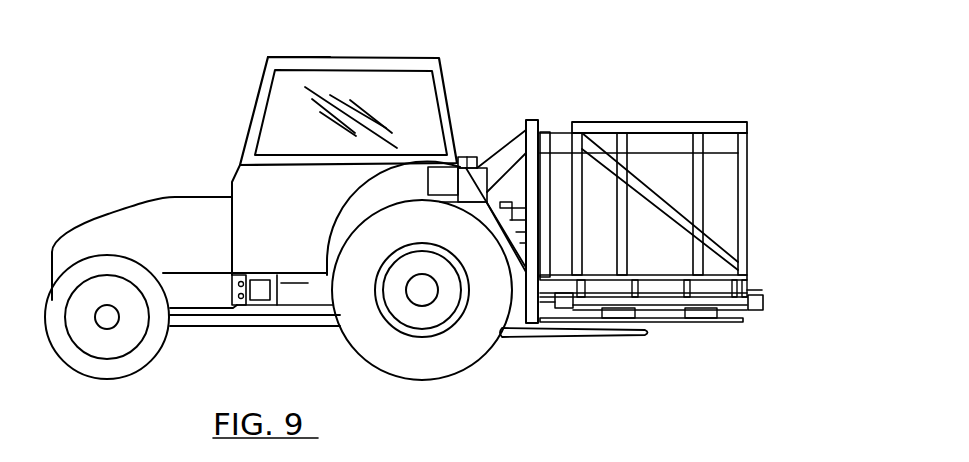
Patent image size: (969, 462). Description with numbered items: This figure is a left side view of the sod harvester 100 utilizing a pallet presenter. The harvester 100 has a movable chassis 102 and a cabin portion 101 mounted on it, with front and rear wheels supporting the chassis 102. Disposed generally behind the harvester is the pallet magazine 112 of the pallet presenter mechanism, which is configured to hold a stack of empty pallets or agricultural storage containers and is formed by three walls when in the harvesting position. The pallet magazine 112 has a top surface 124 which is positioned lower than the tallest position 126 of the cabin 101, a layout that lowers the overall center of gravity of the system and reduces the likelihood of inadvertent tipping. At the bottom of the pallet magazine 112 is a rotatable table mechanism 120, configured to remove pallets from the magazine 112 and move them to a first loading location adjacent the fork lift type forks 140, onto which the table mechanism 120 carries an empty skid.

The harvester 100 is at (484, 46).
The cabin portion 101 is at (357, 61).
The movable chassis 102 is at (212, 323).
The pallet magazine 112 is at (748, 198).
The rotatable table mechanism 120 is at (747, 315).
The top surface 124 is at (733, 117).
The tallest position 126 is at (307, 55).
The forks 140 is at (577, 342).